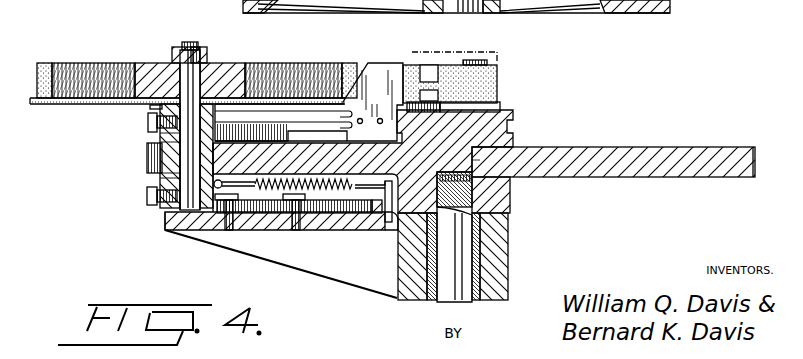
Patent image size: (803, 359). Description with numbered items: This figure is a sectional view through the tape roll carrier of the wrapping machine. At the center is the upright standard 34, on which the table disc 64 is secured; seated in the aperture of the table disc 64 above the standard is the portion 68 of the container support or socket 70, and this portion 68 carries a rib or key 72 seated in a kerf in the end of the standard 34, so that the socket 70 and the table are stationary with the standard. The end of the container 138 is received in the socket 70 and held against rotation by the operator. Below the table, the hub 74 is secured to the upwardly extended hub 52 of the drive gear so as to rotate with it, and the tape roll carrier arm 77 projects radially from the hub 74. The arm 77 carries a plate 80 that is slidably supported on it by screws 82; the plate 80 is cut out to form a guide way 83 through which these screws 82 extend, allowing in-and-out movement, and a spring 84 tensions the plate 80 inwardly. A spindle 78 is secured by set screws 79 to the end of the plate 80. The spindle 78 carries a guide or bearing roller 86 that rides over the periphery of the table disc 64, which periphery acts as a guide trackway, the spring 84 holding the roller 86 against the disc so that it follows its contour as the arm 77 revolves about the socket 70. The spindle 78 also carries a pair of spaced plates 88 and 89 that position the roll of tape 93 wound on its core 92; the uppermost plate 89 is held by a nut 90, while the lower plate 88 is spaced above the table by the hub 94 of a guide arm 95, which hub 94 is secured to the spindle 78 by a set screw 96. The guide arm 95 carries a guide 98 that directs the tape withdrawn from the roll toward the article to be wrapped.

The upright standard 34 is at (470, 211).
The upwardly extended hub 52 is at (476, 252).
The table disc 64 is at (676, 147).
The portion of container support 68 is at (463, 163).
The container support or socket 70 is at (513, 108).
The rib or key 72 is at (468, 181).
The hub 74 is at (498, 272).
The tape roll carrier arm 77 is at (172, 228).
The spindle 78 is at (194, 44).
The set screws 79 is at (147, 194).
The plate 80 is at (163, 211).
The screws 82 is at (248, 211).
The guide way 83 is at (358, 209).
The spring 84 is at (330, 188).
The guide or bearing roller 86 is at (147, 160).
The plate 88 is at (88, 105).
The uppermost plate 89 is at (258, 62).
The nut 90 is at (173, 44).
The core 92 is at (150, 77).
The roll of tape 93 is at (76, 62).
The hub of guide arm 94 is at (165, 107).
The guide arm 95 is at (337, 113).
The set screw 96 is at (148, 127).
The guide 98 is at (387, 72).
The container 138 is at (500, 63).